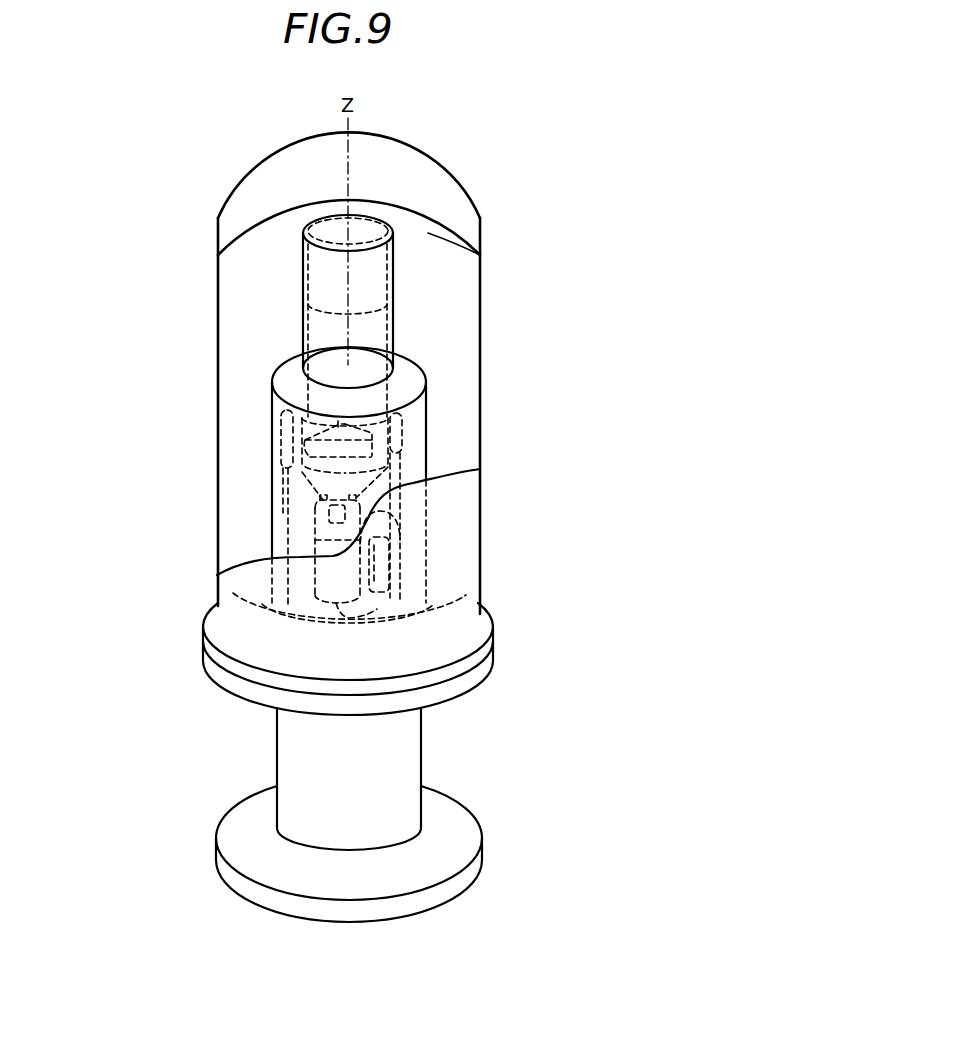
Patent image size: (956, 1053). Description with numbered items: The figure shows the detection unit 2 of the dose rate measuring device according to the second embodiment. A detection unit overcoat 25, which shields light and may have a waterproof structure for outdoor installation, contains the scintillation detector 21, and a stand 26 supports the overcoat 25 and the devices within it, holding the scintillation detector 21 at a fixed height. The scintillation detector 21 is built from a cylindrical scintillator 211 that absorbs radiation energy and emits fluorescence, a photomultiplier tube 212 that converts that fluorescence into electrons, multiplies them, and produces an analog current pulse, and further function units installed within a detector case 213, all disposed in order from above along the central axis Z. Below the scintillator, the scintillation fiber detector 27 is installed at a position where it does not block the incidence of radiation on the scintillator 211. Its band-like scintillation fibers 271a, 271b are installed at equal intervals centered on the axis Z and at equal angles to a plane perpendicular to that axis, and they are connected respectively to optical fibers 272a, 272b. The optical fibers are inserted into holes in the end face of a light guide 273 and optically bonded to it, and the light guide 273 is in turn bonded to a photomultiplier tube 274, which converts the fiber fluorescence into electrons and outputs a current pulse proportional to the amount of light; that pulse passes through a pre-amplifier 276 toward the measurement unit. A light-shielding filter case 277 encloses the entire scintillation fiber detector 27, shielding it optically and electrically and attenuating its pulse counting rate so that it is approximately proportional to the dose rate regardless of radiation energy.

The detection unit 2 is at (497, 816).
The scintillation detector 21 is at (384, 217).
The detection unit overcoat 25 is at (443, 170).
The stand 26 is at (423, 733).
The scintillation fiber detector 27 is at (270, 373).
The scintillator 211 is at (365, 295).
The photomultiplier tube 212 is at (358, 337).
The detector case 213 is at (393, 273).
The scintillation fiber 271a is at (405, 432).
The scintillation fiber 271b is at (275, 416).
The optical fiber 272a is at (395, 462).
The optical fiber 272b is at (272, 475).
The light guide 273 is at (360, 517).
The photomultiplier tube 274 is at (348, 598).
The pre-amplifier 276 is at (390, 567).
The light-shielding filter case 277 is at (270, 530).